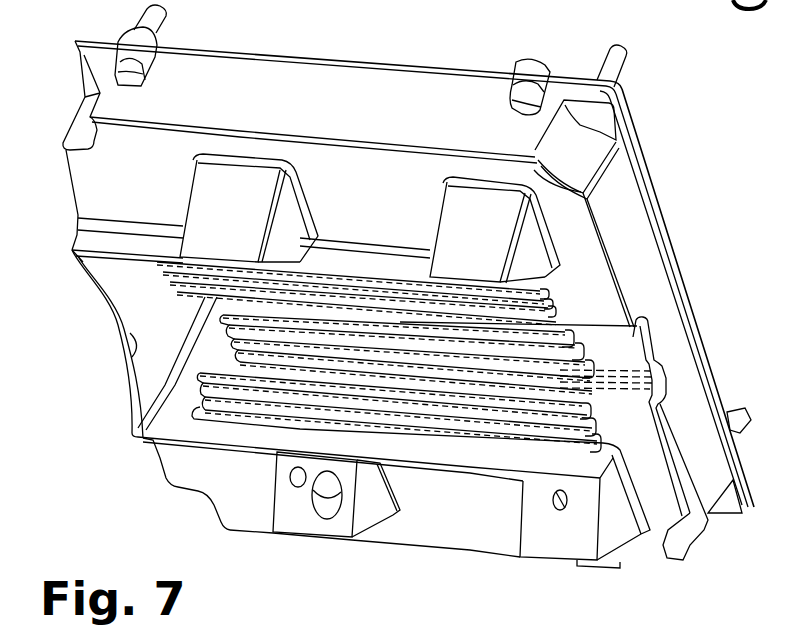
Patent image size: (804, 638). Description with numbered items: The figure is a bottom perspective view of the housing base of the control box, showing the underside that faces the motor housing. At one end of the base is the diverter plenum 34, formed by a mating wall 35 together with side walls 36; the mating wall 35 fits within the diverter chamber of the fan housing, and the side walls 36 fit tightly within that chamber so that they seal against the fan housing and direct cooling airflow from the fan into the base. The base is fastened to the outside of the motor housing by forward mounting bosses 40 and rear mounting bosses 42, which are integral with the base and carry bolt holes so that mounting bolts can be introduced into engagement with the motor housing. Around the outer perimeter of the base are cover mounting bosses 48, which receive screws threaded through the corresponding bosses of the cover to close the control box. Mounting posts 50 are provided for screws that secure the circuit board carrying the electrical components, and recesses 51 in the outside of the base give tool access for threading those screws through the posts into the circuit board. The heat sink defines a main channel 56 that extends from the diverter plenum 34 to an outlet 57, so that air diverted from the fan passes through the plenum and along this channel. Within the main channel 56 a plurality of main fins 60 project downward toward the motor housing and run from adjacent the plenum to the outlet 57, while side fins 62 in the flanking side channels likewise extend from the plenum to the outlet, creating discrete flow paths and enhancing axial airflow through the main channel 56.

The diverter plenum 34 is at (130, 360).
The mating wall 35 is at (112, 325).
The side walls 36 is at (103, 258).
The forward mounting bosses 40 is at (215, 212).
The rear mounting bosses 42 is at (465, 215).
The cover mounting bosses 48 is at (130, 40).
The mounting posts 50 is at (168, 20).
The recesses 51 is at (85, 132).
The main channel 56 is at (666, 381).
The outlet 57 is at (650, 365).
The main fins 60 is at (590, 363).
The side fins 62 is at (557, 310).